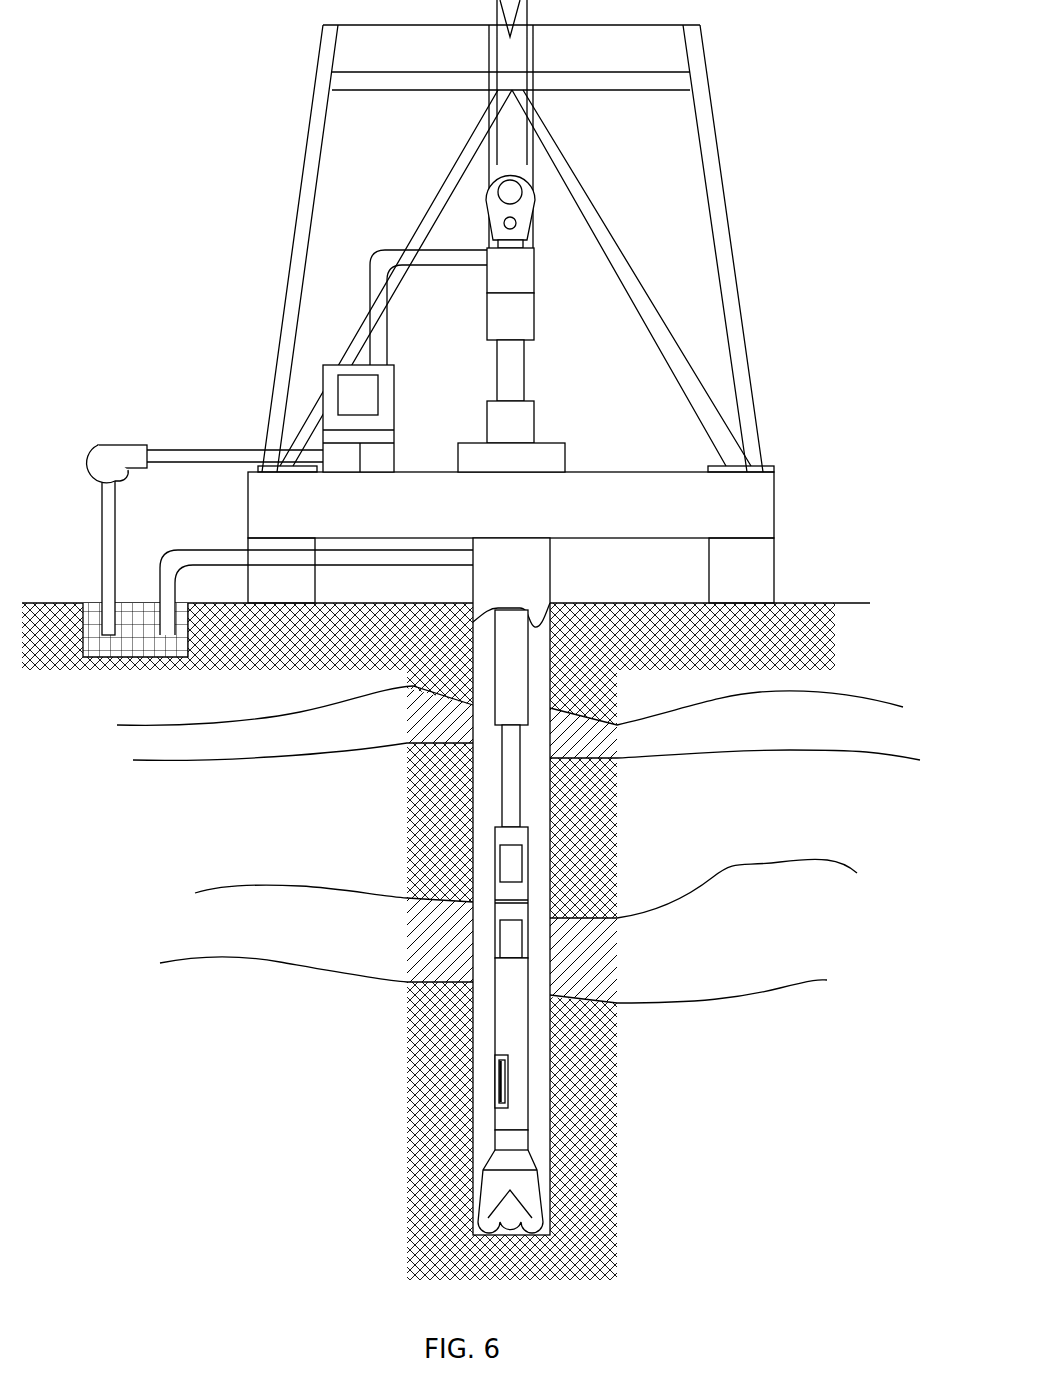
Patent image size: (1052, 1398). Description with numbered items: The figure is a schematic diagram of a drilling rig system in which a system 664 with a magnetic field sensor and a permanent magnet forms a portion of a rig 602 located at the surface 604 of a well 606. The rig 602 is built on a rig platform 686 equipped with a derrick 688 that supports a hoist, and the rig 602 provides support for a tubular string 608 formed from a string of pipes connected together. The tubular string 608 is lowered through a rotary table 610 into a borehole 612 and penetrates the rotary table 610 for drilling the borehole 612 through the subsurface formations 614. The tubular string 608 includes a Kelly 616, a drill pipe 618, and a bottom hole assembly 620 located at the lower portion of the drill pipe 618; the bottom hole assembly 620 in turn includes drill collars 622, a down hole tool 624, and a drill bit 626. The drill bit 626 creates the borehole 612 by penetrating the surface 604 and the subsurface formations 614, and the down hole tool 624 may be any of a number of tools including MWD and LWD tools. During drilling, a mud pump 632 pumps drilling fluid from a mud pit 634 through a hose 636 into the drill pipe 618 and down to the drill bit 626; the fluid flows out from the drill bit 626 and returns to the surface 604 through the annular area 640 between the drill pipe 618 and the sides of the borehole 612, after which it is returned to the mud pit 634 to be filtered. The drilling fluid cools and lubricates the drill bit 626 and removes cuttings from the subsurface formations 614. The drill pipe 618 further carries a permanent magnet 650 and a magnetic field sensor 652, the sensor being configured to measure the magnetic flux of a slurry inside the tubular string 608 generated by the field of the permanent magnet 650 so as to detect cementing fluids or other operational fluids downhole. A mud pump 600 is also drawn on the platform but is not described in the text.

The system 664 is at (177, 103).
The derrick 688 is at (726, 162).
The rig 602 is at (745, 290).
The mud pump 600 is at (397, 352).
The Kelly 616 is at (524, 372).
The rotary table 610 is at (566, 457).
The rig platform 686 is at (775, 482).
The surface 604 is at (845, 603).
The mud pump 632 is at (103, 446).
The hose 636 is at (213, 450).
The mud pit 634 is at (135, 640).
The well 606 is at (556, 598).
The drill collars 622 is at (528, 683).
The drill pipe 618 is at (520, 786).
The annular area 640 is at (536, 830).
The subsurface formations 614 is at (120, 1002).
The bottom hole assembly 620 is at (403, 1213).
The tubular string 608 is at (531, 1058).
The borehole 612 is at (542, 1109).
The down hole tool 624 is at (516, 1117).
The drill bit 626 is at (523, 1187).
The permanent magnet 650 is at (496, 1068).
The magnetic field sensor 652 is at (496, 1095).